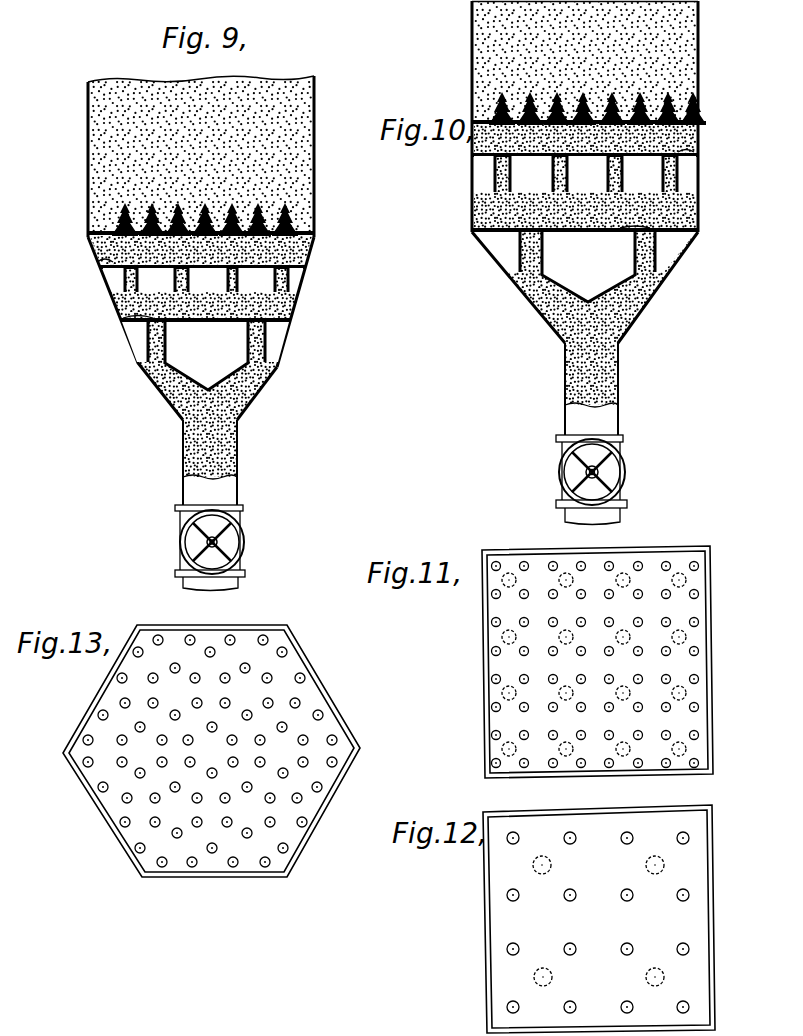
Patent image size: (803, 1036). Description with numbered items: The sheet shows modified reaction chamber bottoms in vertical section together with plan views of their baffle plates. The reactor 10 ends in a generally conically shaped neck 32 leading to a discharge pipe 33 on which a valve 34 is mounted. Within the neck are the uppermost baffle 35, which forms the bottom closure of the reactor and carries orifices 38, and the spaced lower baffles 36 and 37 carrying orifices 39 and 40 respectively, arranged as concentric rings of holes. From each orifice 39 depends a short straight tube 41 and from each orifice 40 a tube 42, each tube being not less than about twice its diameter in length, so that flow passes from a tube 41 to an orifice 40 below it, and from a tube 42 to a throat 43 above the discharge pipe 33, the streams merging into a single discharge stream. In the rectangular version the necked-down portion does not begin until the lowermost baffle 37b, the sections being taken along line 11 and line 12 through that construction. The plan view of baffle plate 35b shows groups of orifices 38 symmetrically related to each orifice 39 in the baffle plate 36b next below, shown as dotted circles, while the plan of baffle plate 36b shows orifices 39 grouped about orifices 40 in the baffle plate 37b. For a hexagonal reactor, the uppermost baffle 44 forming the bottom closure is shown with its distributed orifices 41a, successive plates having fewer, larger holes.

In FIG. 9, the reactor 10 is at (318, 172).
In FIG. 10, the reactor 10 is at (700, 70).
In FIG. 11, the reactor 10 is at (712, 675).
In FIG. 12, the reactor 10 is at (714, 878).
In FIG. 10, the section line 11— 11 is at (468, 113).
In FIG. 10, the section line 12— 12 is at (465, 143).
In FIG. 9, the conical neck 32 is at (300, 313).
In FIG. 10, the conical neck 32 is at (632, 322).
In FIG. 9, the discharge pipe 33 is at (238, 482).
In FIG. 10, the discharge pipe 33 is at (616, 413).
In FIG. 9, the valve 34 is at (180, 540).
In FIG. 10, the valve 34 is at (625, 470).
In FIG. 9, the uppermost baffle 35 is at (150, 217).
In FIG. 10, the uppermost baffle plate 35b is at (702, 123).
In FIG. 11, the uppermost baffle plate 35b is at (687, 718).
In FIG. 9, the intermediate baffle 36 is at (112, 280).
In FIG. 10, the intermediate baffle plate 36b is at (690, 157).
In FIG. 12, the intermediate baffle plate 36b is at (690, 915).
In FIG. 9, the lowermost baffle 37 is at (137, 330).
In FIG. 10, the lowermost baffle plate 37b is at (690, 226).
In FIG. 9, the orifices 38 is at (92, 215).
In FIG. 10, the orifices 38 is at (700, 100).
In FIG. 11, the orifices 38 is at (697, 612).
In FIG. 9, the orifices 39 is at (97, 261).
In FIG. 10, the orifices 39 is at (680, 152).
In FIG. 11, the orifices 39 is at (682, 688).
In FIG. 12, the orifices 39 is at (688, 835).
In FIG. 9, the orifices 40 is at (123, 315).
In FIG. 10, the orifices 40 is at (650, 230).
In FIG. 12, the orifices 40 is at (665, 860).
In FIG. 9, the tube 41 is at (177, 285).
In FIG. 10, the tube 41 is at (513, 176).
In FIG. 13, the orifices 41a is at (304, 678).
In FIG. 9, the tube 42 is at (147, 350).
In FIG. 10, the tube 42 is at (633, 250).
In FIG. 9, the throat 43 is at (238, 417).
In FIG. 13, the uppermost baffle 44 is at (327, 727).